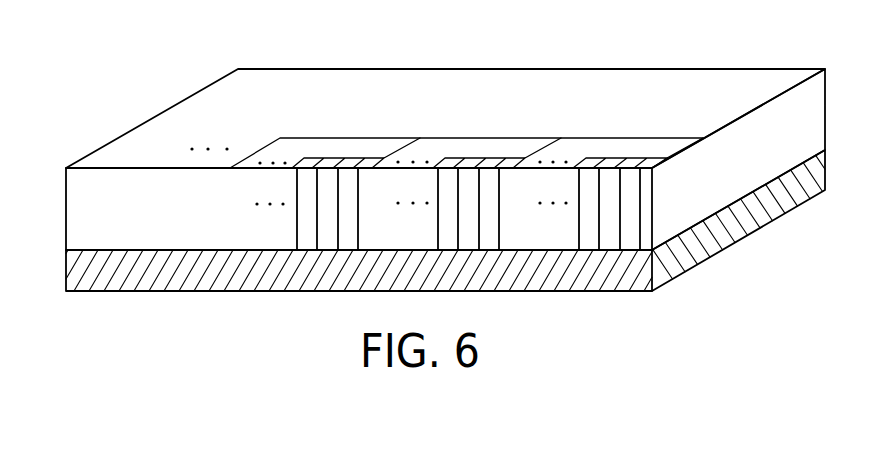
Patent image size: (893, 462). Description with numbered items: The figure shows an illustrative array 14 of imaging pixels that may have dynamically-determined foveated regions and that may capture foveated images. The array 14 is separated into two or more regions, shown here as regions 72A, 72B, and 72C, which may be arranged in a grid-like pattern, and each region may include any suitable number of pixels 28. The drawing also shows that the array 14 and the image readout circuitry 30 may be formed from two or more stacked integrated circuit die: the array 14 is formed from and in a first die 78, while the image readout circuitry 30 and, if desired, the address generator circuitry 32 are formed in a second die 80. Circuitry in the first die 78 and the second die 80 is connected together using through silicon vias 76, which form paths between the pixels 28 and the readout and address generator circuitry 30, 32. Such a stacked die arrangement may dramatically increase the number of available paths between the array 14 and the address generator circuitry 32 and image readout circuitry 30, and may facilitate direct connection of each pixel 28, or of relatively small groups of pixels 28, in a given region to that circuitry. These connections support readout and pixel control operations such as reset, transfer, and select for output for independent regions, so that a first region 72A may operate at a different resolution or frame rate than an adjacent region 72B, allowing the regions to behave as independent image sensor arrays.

The array 14 is at (105, 28).
The pixels 28 is at (653, 162).
The image readout circuitry 30 is at (773, 204).
The address generator circuitry 32 is at (729, 247).
The region 72A is at (595, 145).
The region 72B is at (454, 145).
The region 72C is at (312, 145).
The through silicon vias 76 is at (296, 221).
The first die 78 is at (64, 210).
The second die 80 is at (64, 271).